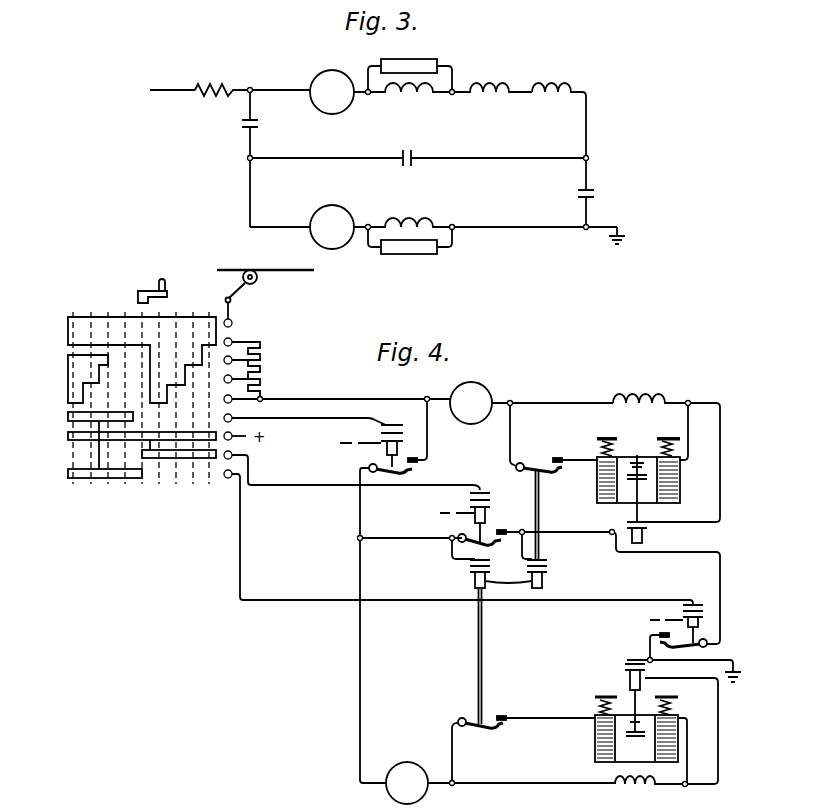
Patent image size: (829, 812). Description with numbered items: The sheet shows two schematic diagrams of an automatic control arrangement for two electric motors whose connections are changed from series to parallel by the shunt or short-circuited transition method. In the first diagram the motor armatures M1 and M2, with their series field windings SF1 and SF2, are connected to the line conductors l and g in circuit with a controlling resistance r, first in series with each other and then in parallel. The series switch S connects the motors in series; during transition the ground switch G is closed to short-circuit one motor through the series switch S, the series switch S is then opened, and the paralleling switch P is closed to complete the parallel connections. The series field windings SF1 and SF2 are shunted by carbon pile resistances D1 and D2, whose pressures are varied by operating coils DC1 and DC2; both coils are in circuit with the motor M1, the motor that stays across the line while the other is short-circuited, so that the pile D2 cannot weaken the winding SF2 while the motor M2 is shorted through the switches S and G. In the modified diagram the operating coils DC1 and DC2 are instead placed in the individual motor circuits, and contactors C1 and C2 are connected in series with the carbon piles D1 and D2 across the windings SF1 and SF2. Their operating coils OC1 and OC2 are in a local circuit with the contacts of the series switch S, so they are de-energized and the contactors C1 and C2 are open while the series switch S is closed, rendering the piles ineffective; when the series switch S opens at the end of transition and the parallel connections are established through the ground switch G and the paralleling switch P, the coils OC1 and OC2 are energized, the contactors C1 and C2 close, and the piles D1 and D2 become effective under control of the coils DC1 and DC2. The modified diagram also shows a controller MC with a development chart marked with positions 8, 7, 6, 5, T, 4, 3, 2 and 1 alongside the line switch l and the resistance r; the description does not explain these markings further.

In FIG. 3, the line conductor l is at (172, 79).
In FIG. 4, the line conductor l is at (288, 268).
In FIG. 3, the controlling resistance r is at (222, 81).
In FIG. 4, the controlling resistance r is at (264, 368).
In FIG. 3, the paralleling switch P is at (241, 158).
In FIG. 4, the paralleling switch P is at (422, 466).
In FIG. 3, the motor armature M1 is at (309, 92).
In FIG. 4, the motor armature M1 is at (531, 403).
In FIG. 3, the motor armature M2 is at (309, 227).
In FIG. 4, the motor armature M2 is at (487, 783).
In FIG. 3, the carbon pile resistance D1 is at (410, 67).
In FIG. 4, the carbon pile resistance D1 is at (653, 462).
In FIG. 3, the carbon pile resistance D2 is at (410, 251).
In FIG. 4, the carbon pile resistance D2 is at (596, 740).
In FIG. 3, the series field winding SF1 is at (410, 100).
In FIG. 4, the series field winding SF1 is at (666, 449).
In FIG. 3, the series field winding SF2 is at (410, 214).
In FIG. 4, the series field winding SF2 is at (650, 792).
In FIG. 3, the operating coil DC1 is at (492, 79).
In FIG. 4, the operating coil DC1 is at (647, 534).
In FIG. 3, the operating coil DC2 is at (559, 112).
In FIG. 4, the operating coil DC2 is at (658, 720).
In FIG. 3, the series switch S is at (418, 169).
In FIG. 4, the series switch S is at (489, 530).
In FIG. 3, the ground switch G is at (576, 192).
In FIG. 4, the ground switch G is at (683, 632).
In FIG. 3, the line conductor g is at (621, 232).
In FIG. 4, the line conductor g is at (740, 662).
In FIG. 4, the master controller MC is at (142, 379).
In FIG. 4, the contactor C1 is at (539, 462).
In FIG. 4, the contactor C2 is at (479, 749).
In FIG. 4, the operating coil OC1 is at (471, 573).
In FIG. 4, the operating coil OC2 is at (547, 574).
In FIG. 4, the controller contact finger 1 is at (210, 407).
In FIG. 4, the controller contact finger 2 is at (193, 407).
In FIG. 4, the controller contact finger 3 is at (176, 407).
In FIG. 4, the controller contact finger 4 is at (159, 407).
In FIG. 4, the controller contact finger 5 is at (125, 407).
In FIG. 4, the controller contact finger 6 is at (108, 407).
In FIG. 4, the controller contact finger 7 is at (91, 407).
In FIG. 4, the controller contact finger 8 is at (73, 407).
In FIG. 4, the controller trolley finger T is at (142, 407).